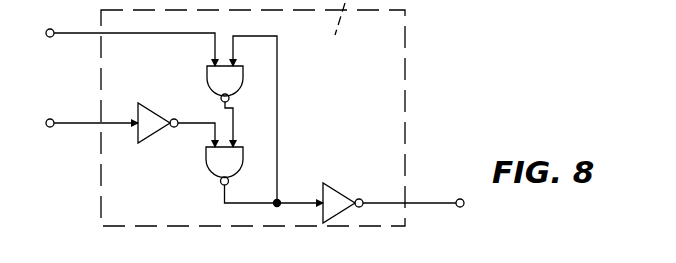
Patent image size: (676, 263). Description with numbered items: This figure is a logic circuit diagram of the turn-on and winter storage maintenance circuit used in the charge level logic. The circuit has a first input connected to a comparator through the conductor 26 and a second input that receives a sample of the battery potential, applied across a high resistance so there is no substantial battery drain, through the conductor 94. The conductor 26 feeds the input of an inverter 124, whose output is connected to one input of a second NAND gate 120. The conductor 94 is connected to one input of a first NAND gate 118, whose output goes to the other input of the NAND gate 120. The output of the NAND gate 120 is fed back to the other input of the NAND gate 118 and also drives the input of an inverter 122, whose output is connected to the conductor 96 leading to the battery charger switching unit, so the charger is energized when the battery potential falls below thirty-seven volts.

The conductor 94 is at (80, 33).
The conductor 26 is at (82, 122).
The inverter 124 is at (146, 135).
The first NAND gate 118 is at (208, 75).
The second NAND gate 120 is at (223, 160).
The inverter 122 is at (337, 195).
The conductor 96 is at (417, 203).